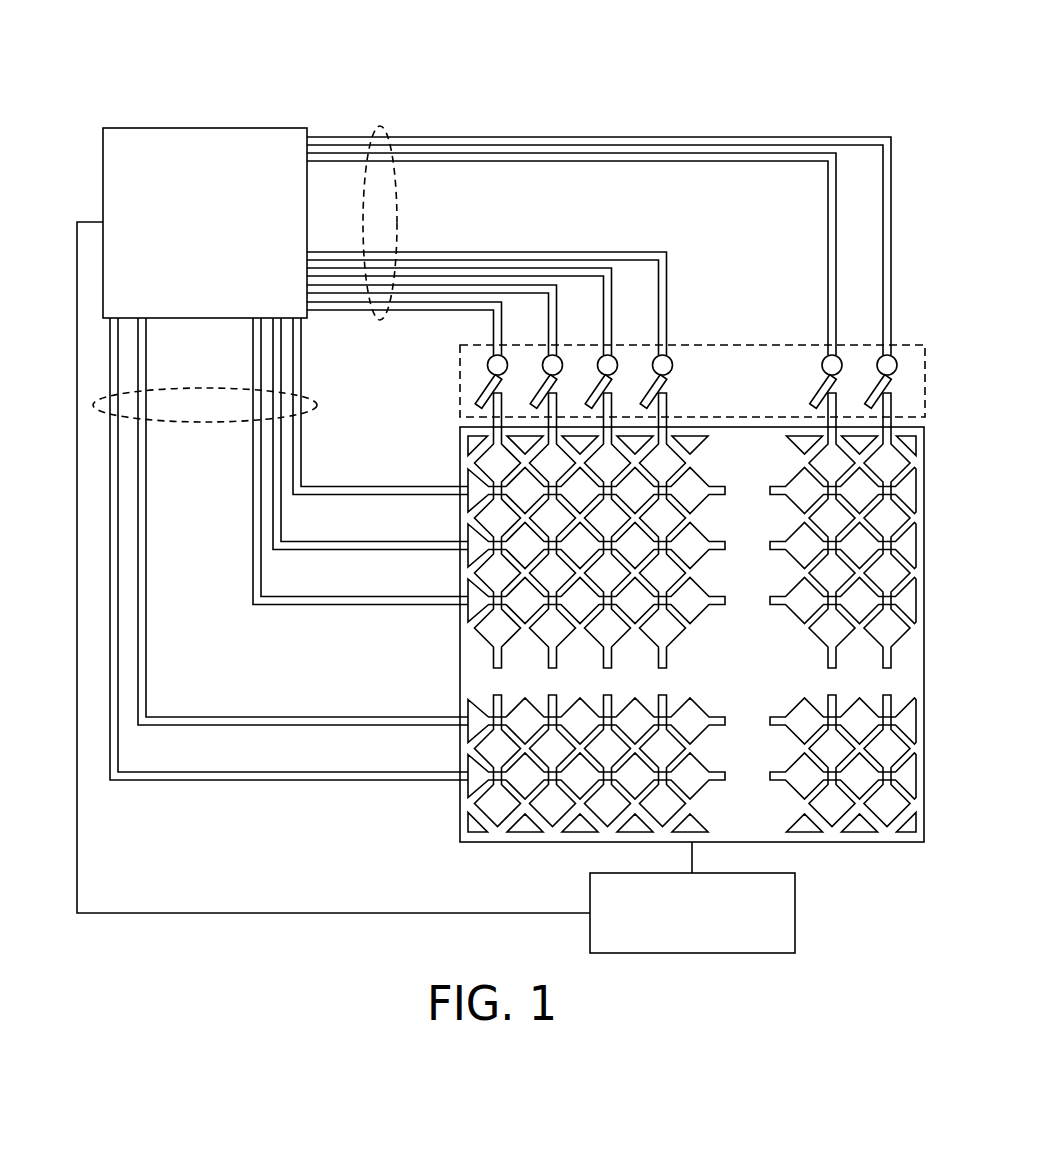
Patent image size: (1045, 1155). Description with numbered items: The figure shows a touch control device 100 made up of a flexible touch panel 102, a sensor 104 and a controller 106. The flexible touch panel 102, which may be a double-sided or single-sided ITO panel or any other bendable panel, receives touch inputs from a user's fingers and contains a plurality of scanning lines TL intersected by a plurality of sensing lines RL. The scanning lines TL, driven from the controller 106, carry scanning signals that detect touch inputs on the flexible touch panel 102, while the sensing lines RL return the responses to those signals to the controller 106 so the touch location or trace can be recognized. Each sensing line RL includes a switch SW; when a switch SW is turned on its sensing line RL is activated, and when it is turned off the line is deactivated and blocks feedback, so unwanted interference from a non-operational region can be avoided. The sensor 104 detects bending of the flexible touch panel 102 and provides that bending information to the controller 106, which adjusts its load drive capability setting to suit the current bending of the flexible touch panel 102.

The touch control device 100 is at (43, 74).
The flexible touch panel 102 is at (823, 845).
The sensor 104 is at (795, 913).
The controller 106 is at (208, 128).
The sensing lines RL is at (381, 128).
The scanning lines TL is at (207, 422).
The switch SW is at (482, 389).